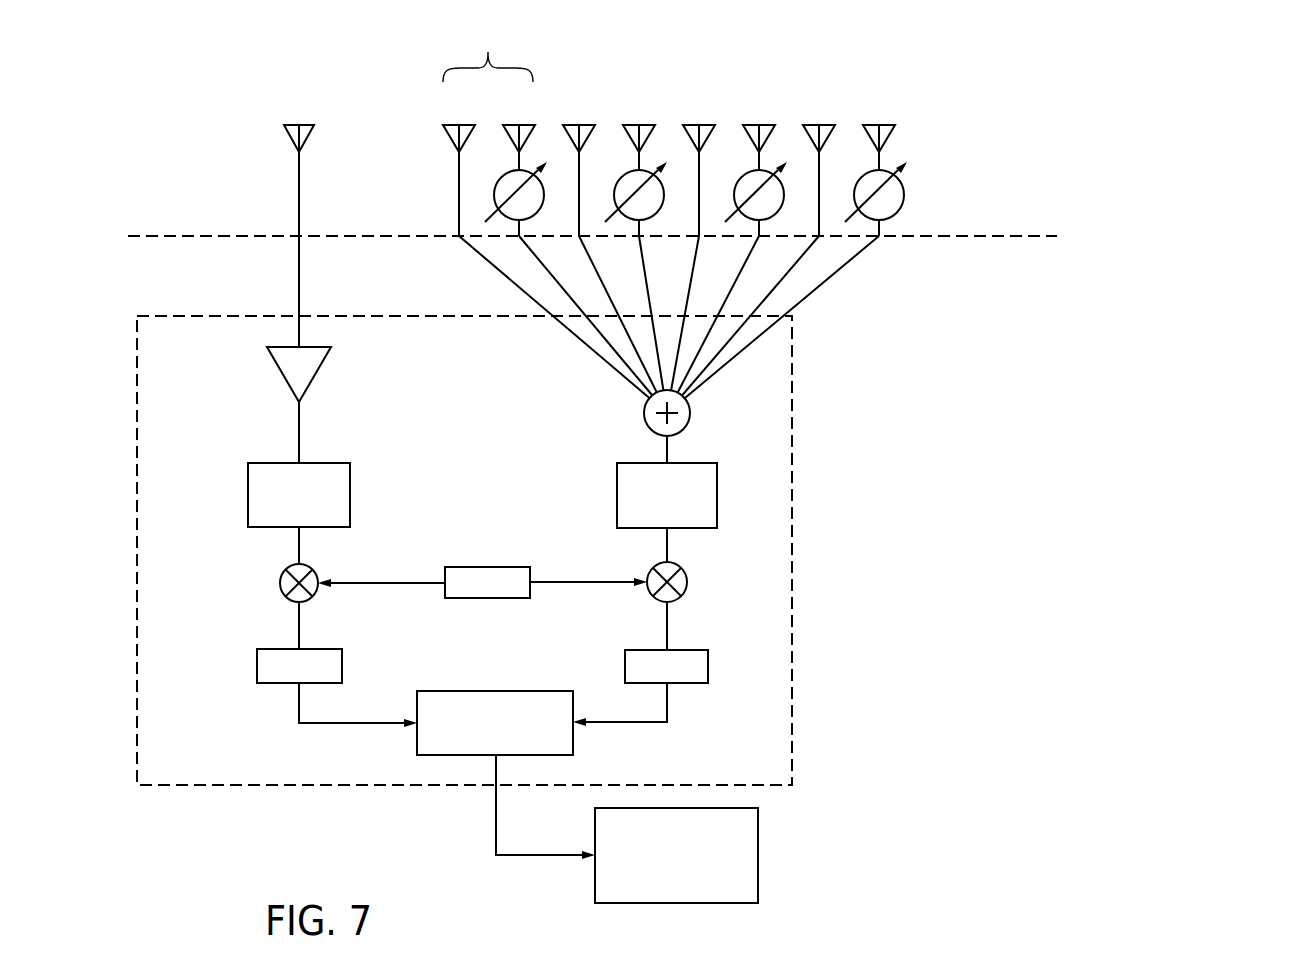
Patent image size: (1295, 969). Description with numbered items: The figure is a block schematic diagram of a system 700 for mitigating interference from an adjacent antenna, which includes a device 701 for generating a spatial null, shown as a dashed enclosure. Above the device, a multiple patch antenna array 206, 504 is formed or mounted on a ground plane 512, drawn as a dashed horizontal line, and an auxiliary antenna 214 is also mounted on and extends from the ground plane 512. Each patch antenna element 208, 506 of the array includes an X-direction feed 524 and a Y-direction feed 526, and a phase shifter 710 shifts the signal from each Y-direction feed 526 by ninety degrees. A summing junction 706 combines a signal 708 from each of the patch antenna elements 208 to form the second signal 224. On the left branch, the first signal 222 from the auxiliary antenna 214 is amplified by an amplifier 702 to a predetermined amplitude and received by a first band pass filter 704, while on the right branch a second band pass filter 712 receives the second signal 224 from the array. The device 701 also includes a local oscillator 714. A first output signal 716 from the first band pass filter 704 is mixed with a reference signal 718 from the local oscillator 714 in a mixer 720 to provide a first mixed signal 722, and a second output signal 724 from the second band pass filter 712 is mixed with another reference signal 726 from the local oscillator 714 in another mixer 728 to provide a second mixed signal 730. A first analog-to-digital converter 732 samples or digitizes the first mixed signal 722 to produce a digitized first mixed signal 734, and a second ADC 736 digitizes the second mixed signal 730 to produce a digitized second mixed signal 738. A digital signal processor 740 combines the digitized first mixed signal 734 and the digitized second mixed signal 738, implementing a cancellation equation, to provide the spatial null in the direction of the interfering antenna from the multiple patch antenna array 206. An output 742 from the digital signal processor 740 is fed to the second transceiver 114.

The system 700 is at (1196, 114).
The second transceiver 114 is at (758, 852).
The multiple patch antenna array 206 is at (952, 168).
The antenna array 504 is at (735, 125).
The patch antenna element 208 is at (487, 48).
The antenna pair 506 is at (477, 152).
The auxiliary antenna 214 is at (288, 128).
The first signal 222 is at (299, 270).
The second signal 224 is at (667, 450).
The ground plane 512 is at (945, 236).
The X-direction feed 524 is at (443, 125).
The Y-direction feed 526 is at (492, 152).
The device 701 is at (792, 432).
The amplifier 702 is at (284, 375).
The first band pass filter 704 is at (248, 497).
The summing junction 706 is at (690, 420).
The signal 708 is at (490, 266).
The phase shifter 710 is at (494, 195).
The second band pass filter 712 is at (717, 497).
The local oscillator 714 is at (465, 567).
The first output signal 716 is at (299, 538).
The reference signal 718 is at (400, 583).
The mixer 720 is at (280, 583).
The first mixed signal 722 is at (299, 632).
The second output signal 724 is at (667, 540).
The another reference signal 726 is at (561, 582).
The another mixer 728 is at (687, 582).
The second mixed signal 730 is at (667, 632).
The first analog-to-digital converter 732 is at (257, 666).
The digitized first mixed signal 734 is at (299, 708).
The second ADC 736 is at (708, 668).
The digitized second mixed signal 738 is at (667, 708).
The digital signal processor 740 is at (470, 691).
The output 742 is at (496, 838).